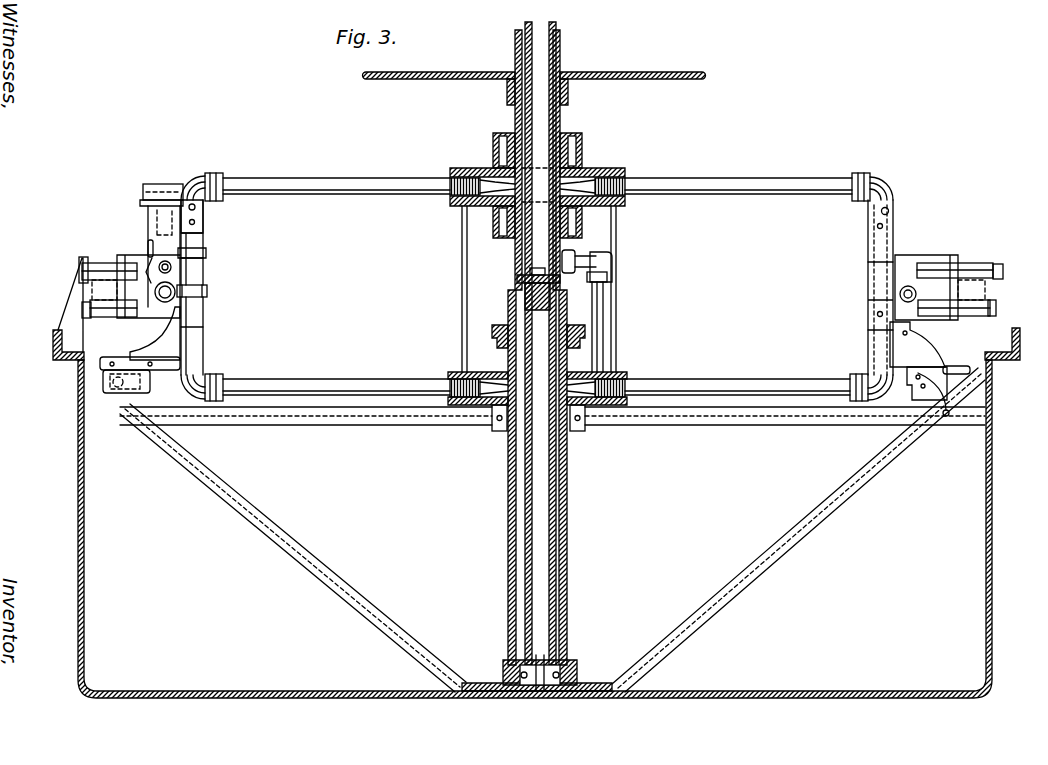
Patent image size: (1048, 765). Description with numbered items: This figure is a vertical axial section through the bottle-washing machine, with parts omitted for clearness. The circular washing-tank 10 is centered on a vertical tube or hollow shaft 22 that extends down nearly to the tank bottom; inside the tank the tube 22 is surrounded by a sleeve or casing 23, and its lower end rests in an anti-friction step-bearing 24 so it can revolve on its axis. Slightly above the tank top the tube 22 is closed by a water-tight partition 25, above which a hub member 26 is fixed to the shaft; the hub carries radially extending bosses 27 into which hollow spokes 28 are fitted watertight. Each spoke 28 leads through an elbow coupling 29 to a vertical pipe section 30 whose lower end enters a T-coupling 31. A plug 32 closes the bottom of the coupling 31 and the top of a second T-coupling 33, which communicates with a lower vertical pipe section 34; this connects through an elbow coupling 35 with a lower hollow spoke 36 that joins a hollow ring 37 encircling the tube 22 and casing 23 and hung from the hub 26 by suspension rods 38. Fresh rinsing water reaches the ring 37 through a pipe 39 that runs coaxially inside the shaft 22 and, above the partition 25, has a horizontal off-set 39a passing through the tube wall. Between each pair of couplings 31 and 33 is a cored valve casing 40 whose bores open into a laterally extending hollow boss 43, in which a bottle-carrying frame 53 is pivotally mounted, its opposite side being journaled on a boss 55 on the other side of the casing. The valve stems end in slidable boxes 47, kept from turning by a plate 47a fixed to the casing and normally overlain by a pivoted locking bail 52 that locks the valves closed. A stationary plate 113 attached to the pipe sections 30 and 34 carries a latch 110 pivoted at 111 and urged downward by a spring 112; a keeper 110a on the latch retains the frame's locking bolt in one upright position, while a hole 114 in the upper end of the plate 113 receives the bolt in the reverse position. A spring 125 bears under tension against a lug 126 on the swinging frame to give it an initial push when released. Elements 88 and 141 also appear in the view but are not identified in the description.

The washing-tank 10 is at (989, 552).
The central vertical tube 22 is at (561, 117).
The sleeve or casing 23 is at (567, 503).
The anti-friction step-bearing 24 is at (576, 658).
The water-tight partition 25 is at (525, 273).
The hub member 26 is at (583, 149).
The radially extending bosses 27 is at (477, 168).
The hollow spokes 28 is at (345, 179).
The elbow couplings 29 is at (195, 177).
The vertical pipe sections 30 is at (193, 253).
The T-couplings 31 is at (203, 274).
The plugs 32 is at (208, 292).
The T-couplings 33 is at (206, 313).
The lower vertical pipe sections 34 is at (198, 352).
The elbow couplings 35 is at (195, 384).
The lower hollow spokes 36 is at (326, 383).
The hollow ring 37 is at (474, 406).
The suspension rods 38 is at (462, 291).
The rinsing water pipe 39 is at (535, 103).
The horizontal off-set 39a is at (576, 255).
The cored valve casing 40 is at (160, 307).
The hollow boss 43 is at (154, 292).
The boxes 47 is at (103, 312).
The plate 47a is at (985, 293).
The locking bail 52 is at (85, 251).
The bottle-carrying frame 53 is at (163, 185).
The boss 55 is at (906, 302).
The bracket block 88 is at (143, 393).
The latch 110 is at (150, 362).
The keeper 110a is at (955, 361).
The latch pivot 111 is at (948, 418).
The spring 112 is at (909, 384).
The stationary plate 113 is at (172, 358).
The hole 114 is at (890, 207).
The spring 125 is at (152, 265).
The lug 126 is at (153, 247).
The disk plate 141 is at (638, 78).